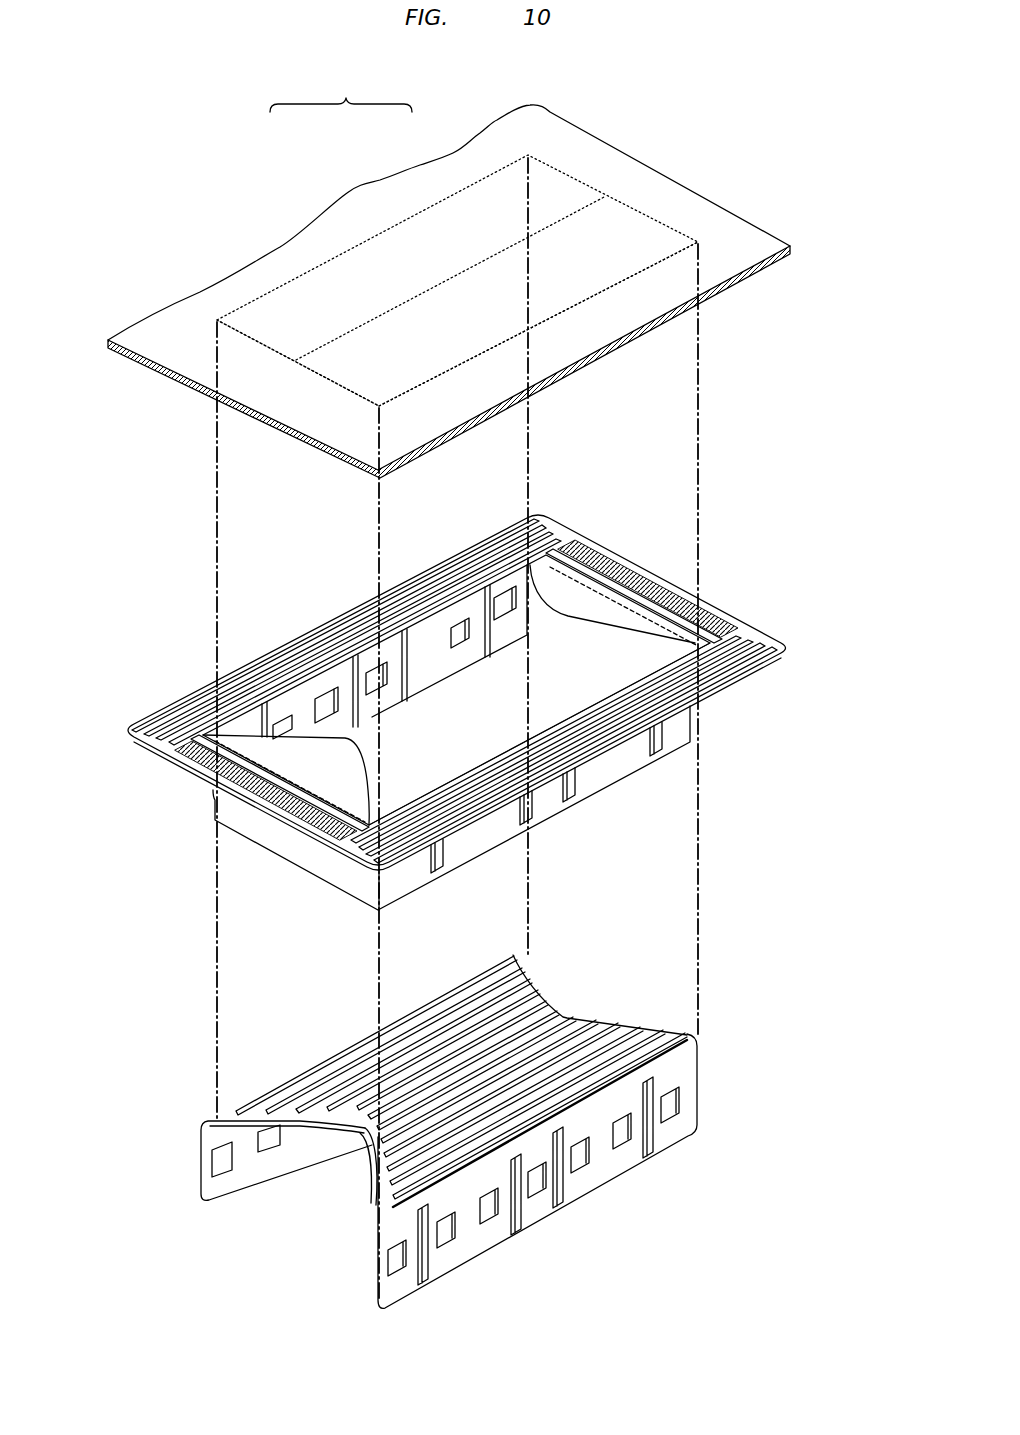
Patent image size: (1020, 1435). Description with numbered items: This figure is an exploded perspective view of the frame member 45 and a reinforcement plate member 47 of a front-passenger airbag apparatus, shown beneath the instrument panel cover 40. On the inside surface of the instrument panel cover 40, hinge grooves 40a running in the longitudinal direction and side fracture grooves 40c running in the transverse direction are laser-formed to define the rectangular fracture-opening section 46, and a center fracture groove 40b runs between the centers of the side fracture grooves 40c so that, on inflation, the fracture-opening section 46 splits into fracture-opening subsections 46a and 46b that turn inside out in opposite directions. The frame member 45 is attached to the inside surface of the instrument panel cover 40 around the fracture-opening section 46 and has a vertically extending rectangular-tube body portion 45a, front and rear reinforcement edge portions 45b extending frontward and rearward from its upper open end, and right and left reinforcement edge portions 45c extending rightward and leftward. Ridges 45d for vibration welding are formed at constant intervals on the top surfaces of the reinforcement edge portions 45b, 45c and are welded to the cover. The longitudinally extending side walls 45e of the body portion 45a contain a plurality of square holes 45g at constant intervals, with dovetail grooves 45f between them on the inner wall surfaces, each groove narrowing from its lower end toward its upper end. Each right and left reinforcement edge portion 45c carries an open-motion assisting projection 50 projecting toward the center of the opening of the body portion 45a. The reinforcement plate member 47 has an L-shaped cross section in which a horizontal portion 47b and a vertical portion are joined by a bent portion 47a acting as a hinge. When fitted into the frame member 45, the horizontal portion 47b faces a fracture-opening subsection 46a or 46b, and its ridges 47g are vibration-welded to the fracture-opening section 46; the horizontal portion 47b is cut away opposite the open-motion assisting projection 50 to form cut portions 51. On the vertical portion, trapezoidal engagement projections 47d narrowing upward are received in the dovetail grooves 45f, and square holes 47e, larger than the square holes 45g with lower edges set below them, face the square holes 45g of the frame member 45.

The instrument panel cover 40 is at (582, 139).
The hinge grooves 40a is at (237, 307).
The center fracture groove 40b is at (352, 323).
The side fracture grooves 40c is at (647, 203).
The fracture-opening section 46 is at (341, 93).
The fracture-opening subsection 46a is at (398, 257).
The fracture-opening subsection 46b is at (502, 305).
The frame member 45 is at (168, 682).
The body portion 45a is at (292, 835).
The front and rear reinforcement edge portions 45b is at (355, 600).
The right and left reinforcement edge portions 45c is at (713, 595).
The ridges 45d is at (293, 643).
The longitudinally extending side walls 45e is at (467, 845).
The dovetail grooves 45f is at (482, 612).
The square holes 45g is at (470, 640).
The open-motion assisting projection 50 is at (580, 615).
The reinforcement plate member 47 is at (194, 1080).
The bent portion 47a is at (593, 1097).
The horizontal portion 47b is at (303, 1077).
The engagement projections 47d is at (560, 1207).
The square holes 47e is at (493, 1217).
The ridges 47g is at (520, 1092).
The cut portions 51 is at (570, 1008).